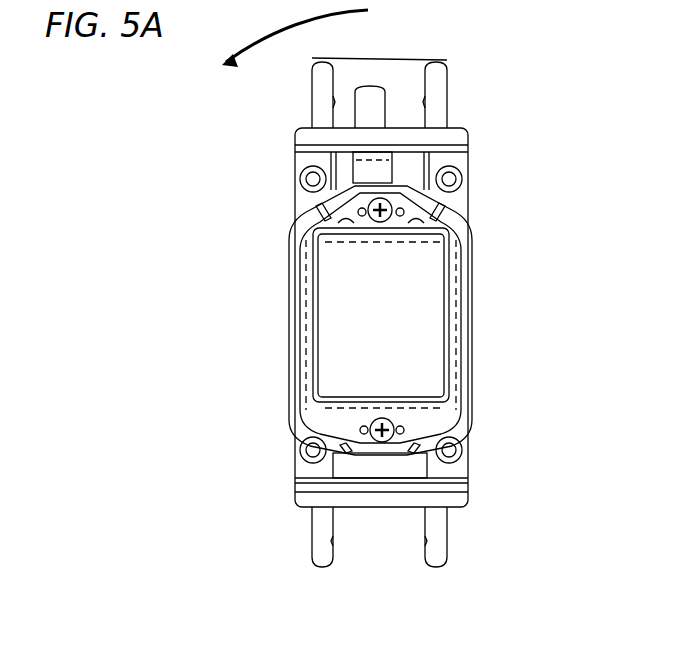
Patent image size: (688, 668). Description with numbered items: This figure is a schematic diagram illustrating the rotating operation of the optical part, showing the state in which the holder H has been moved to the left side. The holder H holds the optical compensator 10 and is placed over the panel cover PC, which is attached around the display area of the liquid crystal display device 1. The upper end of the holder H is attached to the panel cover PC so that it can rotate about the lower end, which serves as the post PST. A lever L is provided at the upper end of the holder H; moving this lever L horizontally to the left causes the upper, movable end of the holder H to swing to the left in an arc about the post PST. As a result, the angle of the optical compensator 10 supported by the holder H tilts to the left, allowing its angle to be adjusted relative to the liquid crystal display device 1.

The optical compensator 10 is at (373, 305).
The liquid crystal display device 1 is at (395, 325).
The holder H is at (465, 367).
The panel cover PC is at (462, 233).
The lever L is at (370, 93).
The post PST is at (374, 453).